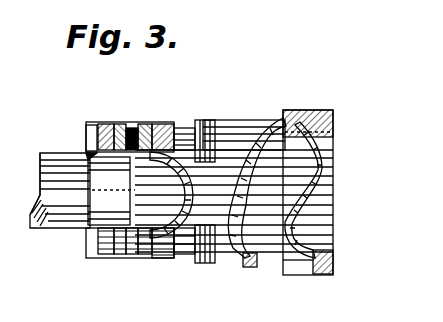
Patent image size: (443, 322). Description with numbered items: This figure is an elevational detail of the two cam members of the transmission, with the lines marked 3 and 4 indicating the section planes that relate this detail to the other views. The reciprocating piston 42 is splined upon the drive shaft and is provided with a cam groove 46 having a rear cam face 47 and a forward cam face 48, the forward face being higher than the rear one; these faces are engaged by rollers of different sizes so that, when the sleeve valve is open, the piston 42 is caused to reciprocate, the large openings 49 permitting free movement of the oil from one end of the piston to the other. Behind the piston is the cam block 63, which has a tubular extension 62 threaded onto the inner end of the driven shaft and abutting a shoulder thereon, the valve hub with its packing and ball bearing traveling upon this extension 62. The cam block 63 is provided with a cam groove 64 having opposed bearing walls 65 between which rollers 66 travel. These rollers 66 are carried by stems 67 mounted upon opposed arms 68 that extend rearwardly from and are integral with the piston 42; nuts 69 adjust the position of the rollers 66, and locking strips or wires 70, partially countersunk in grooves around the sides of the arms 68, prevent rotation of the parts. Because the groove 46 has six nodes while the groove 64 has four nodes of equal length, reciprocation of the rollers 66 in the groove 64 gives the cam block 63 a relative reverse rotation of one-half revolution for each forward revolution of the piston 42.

The section line 3- 3 is at (442, 88).
The section line 4- 4 is at (130, 86).
The reciprocating piston 42 is at (273, 200).
The cam groove 46 is at (258, 120).
The rear cam face 47 is at (245, 268).
The forward cam face 48 is at (318, 170).
The large openings 49 is at (330, 132).
The tubular extension 62 is at (78, 187).
The cam block 63 is at (86, 210).
The cam groove 64 is at (171, 195).
The bearing walls 65 is at (134, 186).
The rollers 66 is at (82, 157).
The stems 67 is at (120, 124).
The arms 68 is at (172, 126).
The nuts 69 is at (120, 123).
The locking strips or wires 70 is at (133, 135).